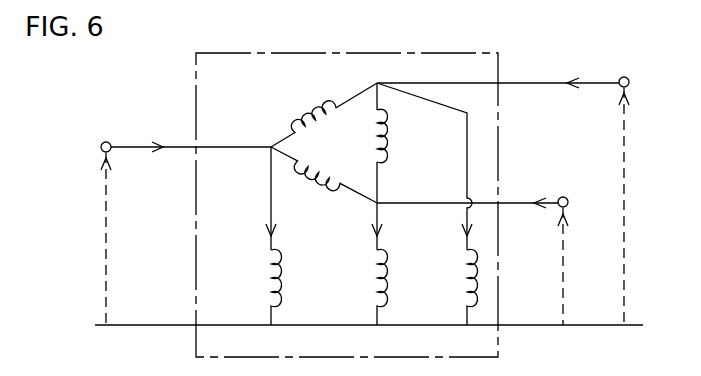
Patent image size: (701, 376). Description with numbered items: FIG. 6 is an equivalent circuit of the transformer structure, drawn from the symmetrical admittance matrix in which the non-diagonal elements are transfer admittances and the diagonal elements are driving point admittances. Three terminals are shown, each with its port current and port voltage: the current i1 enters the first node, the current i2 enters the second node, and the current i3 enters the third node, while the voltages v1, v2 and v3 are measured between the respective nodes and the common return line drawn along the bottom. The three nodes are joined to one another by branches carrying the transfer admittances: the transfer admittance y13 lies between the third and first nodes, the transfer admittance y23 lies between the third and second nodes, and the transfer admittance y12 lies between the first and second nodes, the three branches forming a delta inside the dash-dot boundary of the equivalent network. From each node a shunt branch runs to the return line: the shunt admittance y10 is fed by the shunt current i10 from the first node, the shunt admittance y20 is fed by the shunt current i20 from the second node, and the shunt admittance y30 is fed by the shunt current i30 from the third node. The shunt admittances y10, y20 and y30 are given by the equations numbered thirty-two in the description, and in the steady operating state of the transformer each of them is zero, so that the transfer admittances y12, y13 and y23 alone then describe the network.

The port 1 current i1 is at (503, 69).
The port 2 current i2 is at (472, 189).
The port 3 current i3 is at (186, 136).
The port 1 voltage v1 is at (635, 206).
The port 2 voltage v2 is at (573, 266).
The port 3 voltage v3 is at (95, 239).
The transfer admittance y13 is at (322, 110).
The transfer admittance y23 is at (321, 182).
The transfer admittance y12 is at (408, 135).
The shunt admittance y10 is at (452, 287).
The shunt admittance y20 is at (360, 287).
The shunt admittance y30 is at (255, 287).
The shunt branch current i10 is at (454, 233).
The shunt branch current i20 is at (361, 233).
The shunt branch current i30 is at (254, 231).